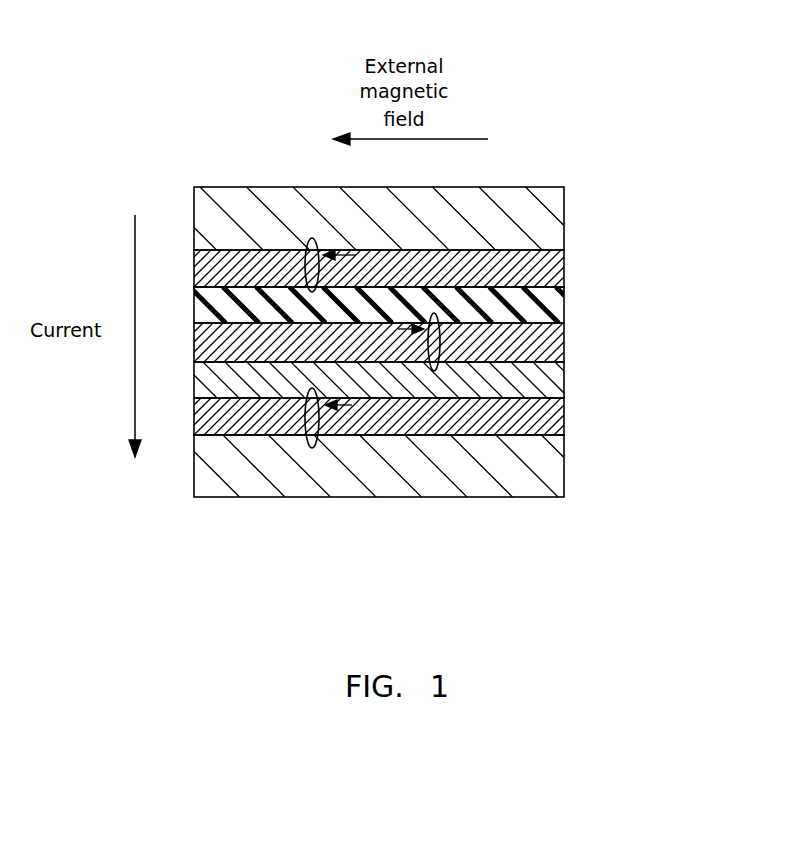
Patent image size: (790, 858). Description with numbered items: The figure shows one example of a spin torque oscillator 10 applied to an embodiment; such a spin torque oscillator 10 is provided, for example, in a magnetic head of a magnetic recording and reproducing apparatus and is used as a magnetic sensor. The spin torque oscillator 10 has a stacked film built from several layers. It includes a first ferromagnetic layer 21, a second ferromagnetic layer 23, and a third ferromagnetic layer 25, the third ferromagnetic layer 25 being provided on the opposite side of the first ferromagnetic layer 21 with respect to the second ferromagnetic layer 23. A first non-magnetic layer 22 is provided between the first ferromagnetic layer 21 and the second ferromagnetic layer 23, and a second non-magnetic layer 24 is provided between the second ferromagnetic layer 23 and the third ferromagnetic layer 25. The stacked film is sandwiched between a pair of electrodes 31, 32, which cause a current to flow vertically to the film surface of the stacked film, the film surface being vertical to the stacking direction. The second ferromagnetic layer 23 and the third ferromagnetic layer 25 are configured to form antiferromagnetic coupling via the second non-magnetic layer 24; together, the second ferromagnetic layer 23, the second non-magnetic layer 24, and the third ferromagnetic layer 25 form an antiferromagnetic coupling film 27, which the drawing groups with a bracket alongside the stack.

The spin torque oscillator 10 is at (194, 131).
The electrode 31 is at (564, 218).
The first ferromagnetic layer 21 is at (564, 268).
The first non-magnetic layer 22 is at (564, 303).
The second ferromagnetic layer 23 is at (564, 339).
The second non-magnetic layer 24 is at (564, 375).
The third ferromagnetic layer 25 is at (564, 416).
The antiferromagnetic coupling film 27 is at (443, 375).
The electrode 32 is at (564, 470).